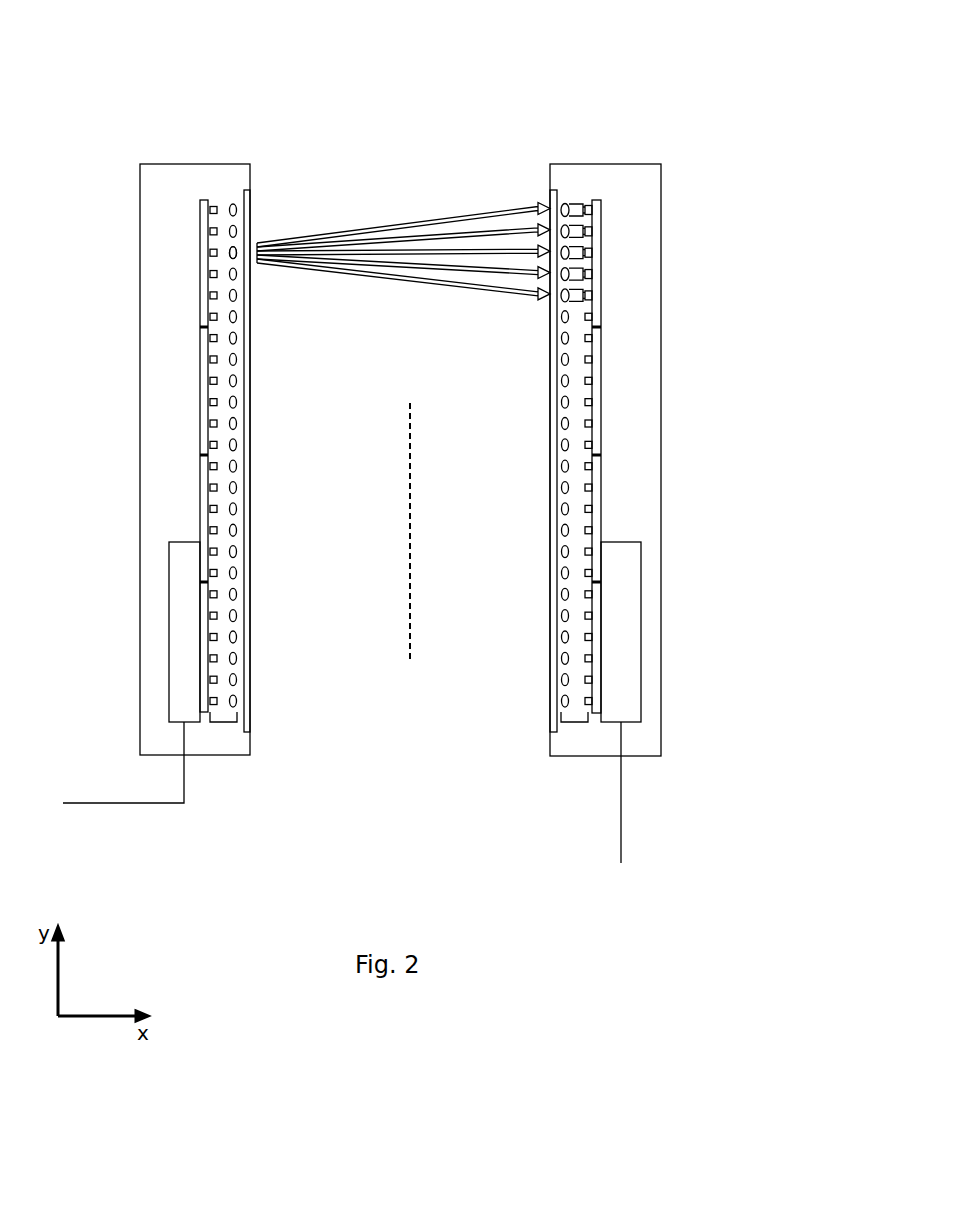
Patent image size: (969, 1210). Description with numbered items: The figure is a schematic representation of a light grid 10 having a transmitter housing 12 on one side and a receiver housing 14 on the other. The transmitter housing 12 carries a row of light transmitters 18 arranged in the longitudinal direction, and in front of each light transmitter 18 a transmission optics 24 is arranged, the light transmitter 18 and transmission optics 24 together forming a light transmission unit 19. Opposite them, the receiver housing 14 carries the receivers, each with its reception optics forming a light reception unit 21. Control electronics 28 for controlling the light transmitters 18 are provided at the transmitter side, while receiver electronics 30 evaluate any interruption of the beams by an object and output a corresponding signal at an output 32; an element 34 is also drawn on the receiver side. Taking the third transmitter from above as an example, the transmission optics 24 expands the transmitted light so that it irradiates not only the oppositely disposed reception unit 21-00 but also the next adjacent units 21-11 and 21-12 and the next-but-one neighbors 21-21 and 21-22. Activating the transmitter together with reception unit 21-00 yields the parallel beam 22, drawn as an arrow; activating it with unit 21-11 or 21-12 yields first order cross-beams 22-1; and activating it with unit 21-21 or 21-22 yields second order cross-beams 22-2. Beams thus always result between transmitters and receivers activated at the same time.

The light grid 10 is at (156, 80).
The transmitter housing 12 is at (163, 178).
The receiver housing 14 is at (640, 172).
The light transmitter 18 is at (215, 252).
The light transmission unit 19 is at (222, 723).
The light reception unit 21 is at (573, 722).
The next-but-one neighbor reception unit 21-22 is at (580, 207).
The next adjacent reception unit 21-12 is at (578, 221).
The oppositely disposed reception unit 21-00 is at (578, 251).
The next adjacent reception unit 21-11 is at (577, 267).
The next-but-one neighbor reception unit 21-21 is at (576, 300).
The light beam 22 is at (435, 253).
The first order cross-beam 22-1 is at (497, 233).
The second order cross-beam 22-2 is at (410, 225).
The transmission optics 24 is at (234, 252).
The control electronics 28 is at (188, 614).
The receiver electronics 30 is at (615, 646).
The output 32 is at (622, 725).
The detector array substrate 34 is at (603, 338).